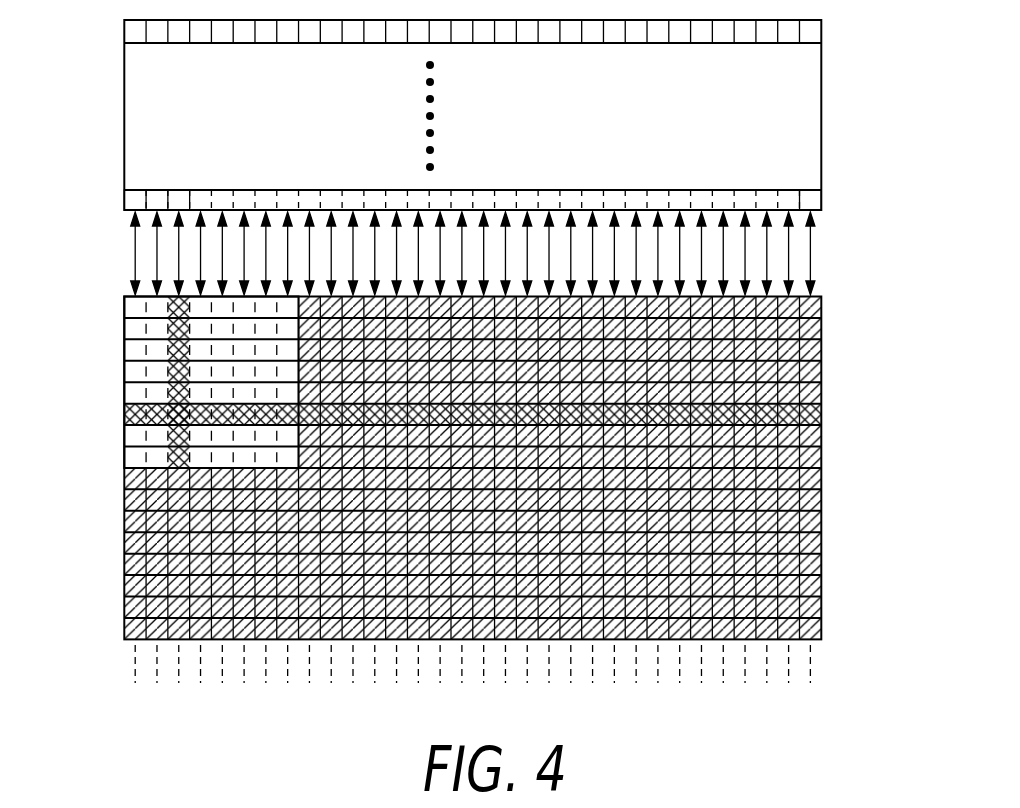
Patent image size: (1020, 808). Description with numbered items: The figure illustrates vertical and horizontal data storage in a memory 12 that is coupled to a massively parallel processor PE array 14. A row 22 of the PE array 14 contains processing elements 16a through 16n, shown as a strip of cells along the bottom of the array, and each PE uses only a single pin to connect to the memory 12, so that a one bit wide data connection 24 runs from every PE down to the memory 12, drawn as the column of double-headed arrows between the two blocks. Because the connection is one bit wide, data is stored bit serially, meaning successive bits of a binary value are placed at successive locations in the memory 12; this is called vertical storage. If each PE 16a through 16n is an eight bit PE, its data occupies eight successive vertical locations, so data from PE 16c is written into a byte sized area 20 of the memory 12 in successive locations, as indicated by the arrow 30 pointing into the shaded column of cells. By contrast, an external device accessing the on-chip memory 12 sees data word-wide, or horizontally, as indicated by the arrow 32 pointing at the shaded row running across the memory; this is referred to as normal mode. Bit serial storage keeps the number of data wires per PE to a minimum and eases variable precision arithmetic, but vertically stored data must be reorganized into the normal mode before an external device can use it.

The memory 12 is at (477, 490).
The PE array 14 is at (147, 97).
The processing element 16a is at (135, 196).
The processing element 16c is at (178, 196).
The processing element 16n is at (812, 200).
The byte sized area 20 is at (125, 348).
The row 22 is at (125, 197).
The one bit wide data connection 24 is at (811, 247).
The arrow 30 is at (168, 455).
The arrow 32 is at (825, 421).